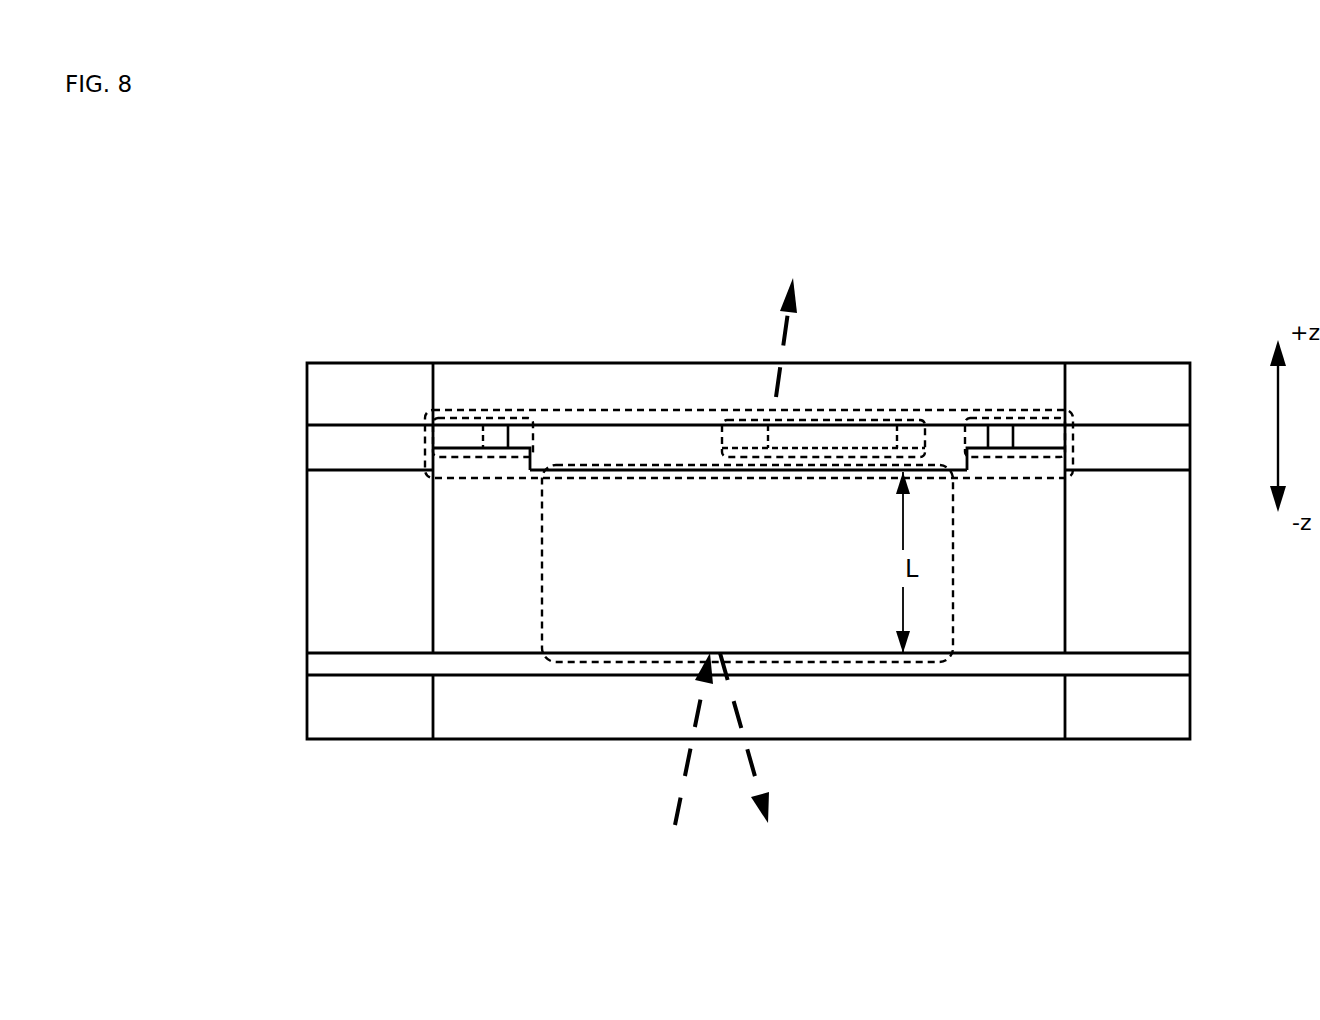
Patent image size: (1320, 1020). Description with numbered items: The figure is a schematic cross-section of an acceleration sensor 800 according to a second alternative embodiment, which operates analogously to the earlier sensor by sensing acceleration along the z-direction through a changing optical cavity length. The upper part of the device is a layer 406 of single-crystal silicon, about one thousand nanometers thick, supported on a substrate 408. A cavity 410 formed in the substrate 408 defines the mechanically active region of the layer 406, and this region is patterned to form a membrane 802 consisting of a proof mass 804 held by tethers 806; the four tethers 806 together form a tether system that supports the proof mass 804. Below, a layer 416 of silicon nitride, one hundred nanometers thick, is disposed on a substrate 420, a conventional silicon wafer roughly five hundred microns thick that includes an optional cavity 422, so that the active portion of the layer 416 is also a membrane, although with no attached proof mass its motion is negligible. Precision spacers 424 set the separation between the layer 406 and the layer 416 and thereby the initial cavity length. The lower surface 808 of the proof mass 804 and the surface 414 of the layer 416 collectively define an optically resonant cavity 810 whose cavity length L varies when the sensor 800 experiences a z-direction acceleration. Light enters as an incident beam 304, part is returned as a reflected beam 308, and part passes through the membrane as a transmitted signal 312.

The acceleration sensor 800 is at (176, 344).
The membrane 802 is at (622, 410).
The proof mass 804 is at (702, 448).
The tethers 806 is at (492, 416).
The surface 808 is at (683, 471).
The optically resonant cavity 810 is at (541, 551).
The transmitted signal 312 is at (797, 291).
The incident light beam 304 is at (677, 805).
The reflected light beam 308 is at (771, 810).
The layer 406 is at (307, 440).
The substrate 408 is at (381, 407).
The cavity 410 is at (1026, 402).
The surface 414 is at (685, 653).
The layer 416 is at (307, 663).
The substrate 420 is at (381, 719).
The cavity 422 is at (1026, 719).
The spacers 424 is at (381, 549).